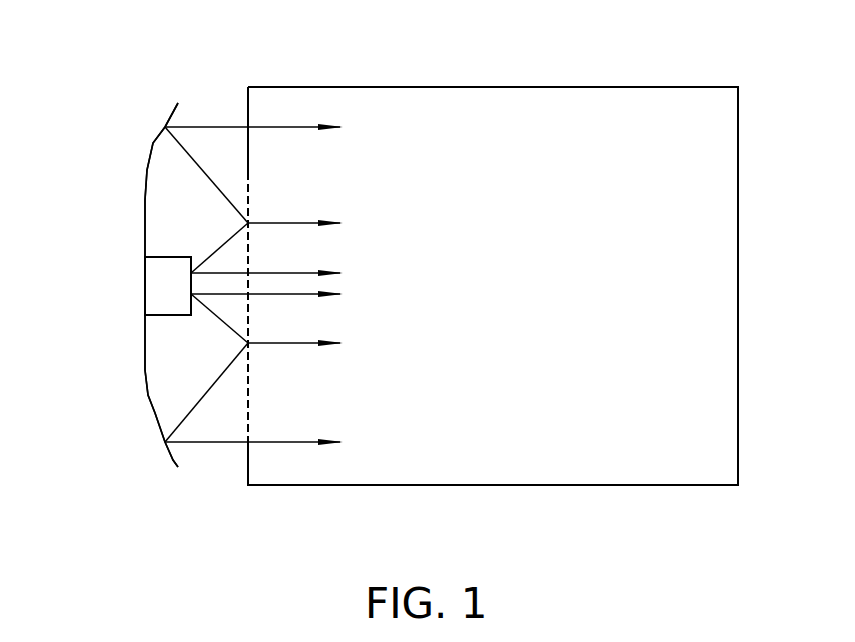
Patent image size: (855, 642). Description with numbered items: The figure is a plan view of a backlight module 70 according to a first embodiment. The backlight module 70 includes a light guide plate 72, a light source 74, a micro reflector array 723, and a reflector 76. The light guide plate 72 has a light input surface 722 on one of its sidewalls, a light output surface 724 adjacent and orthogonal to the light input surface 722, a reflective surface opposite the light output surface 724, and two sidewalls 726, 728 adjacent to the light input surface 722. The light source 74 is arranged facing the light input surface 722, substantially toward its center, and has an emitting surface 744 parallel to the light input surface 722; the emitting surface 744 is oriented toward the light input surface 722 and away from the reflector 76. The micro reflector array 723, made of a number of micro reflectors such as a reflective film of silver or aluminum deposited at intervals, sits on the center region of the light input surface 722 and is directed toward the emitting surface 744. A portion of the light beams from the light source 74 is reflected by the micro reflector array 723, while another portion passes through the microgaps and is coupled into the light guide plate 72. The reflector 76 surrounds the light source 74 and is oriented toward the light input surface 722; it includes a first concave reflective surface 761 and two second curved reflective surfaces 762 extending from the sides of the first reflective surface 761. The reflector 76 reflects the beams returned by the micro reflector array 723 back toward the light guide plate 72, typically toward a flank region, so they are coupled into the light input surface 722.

The backlight module 70 is at (412, 52).
The light guide plate 72 is at (569, 78).
The light input surface 722 is at (242, 103).
The micro reflector array 723 is at (243, 387).
The light output surface 724 is at (706, 223).
The sidewall 726 is at (540, 494).
The sidewall 728 is at (676, 80).
The light source 74 is at (168, 296).
The emitting surface 744 is at (198, 320).
The reflector 76 is at (66, 123).
The first concave reflective surface 761 is at (145, 268).
The second curved reflective surface 762 is at (157, 145).